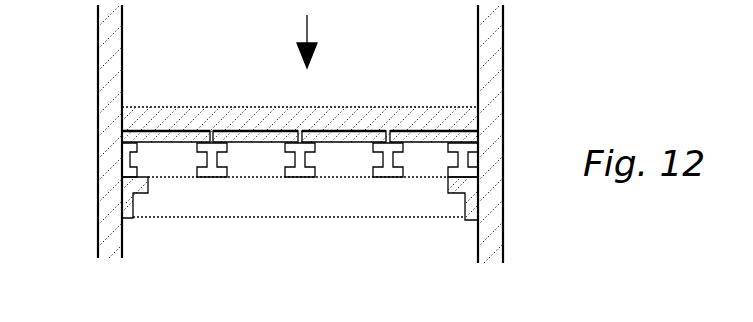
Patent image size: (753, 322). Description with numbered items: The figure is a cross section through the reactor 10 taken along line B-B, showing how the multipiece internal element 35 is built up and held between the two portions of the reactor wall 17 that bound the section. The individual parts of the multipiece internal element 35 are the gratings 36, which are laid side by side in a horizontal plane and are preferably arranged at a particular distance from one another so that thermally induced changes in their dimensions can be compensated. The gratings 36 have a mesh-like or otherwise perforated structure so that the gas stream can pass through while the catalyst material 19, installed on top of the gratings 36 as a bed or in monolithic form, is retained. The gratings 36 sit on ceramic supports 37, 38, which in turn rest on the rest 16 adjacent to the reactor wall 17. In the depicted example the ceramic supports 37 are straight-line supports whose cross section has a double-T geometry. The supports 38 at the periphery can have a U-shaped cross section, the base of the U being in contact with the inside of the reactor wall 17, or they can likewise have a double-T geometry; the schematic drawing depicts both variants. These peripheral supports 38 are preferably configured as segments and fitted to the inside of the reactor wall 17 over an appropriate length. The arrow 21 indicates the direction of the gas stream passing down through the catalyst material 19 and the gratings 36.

The reactor 10 is at (580, 58).
The rest 16 is at (122, 190).
The reactor wall 17 is at (490, 31).
The catalyst material 19 is at (180, 120).
The load direction 21 is at (311, 30).
The multipiece internal element 35 is at (260, 148).
The gratings 36 is at (188, 140).
The ceramic supports 37 is at (213, 178).
The supports at the periphery 38 is at (122, 147).